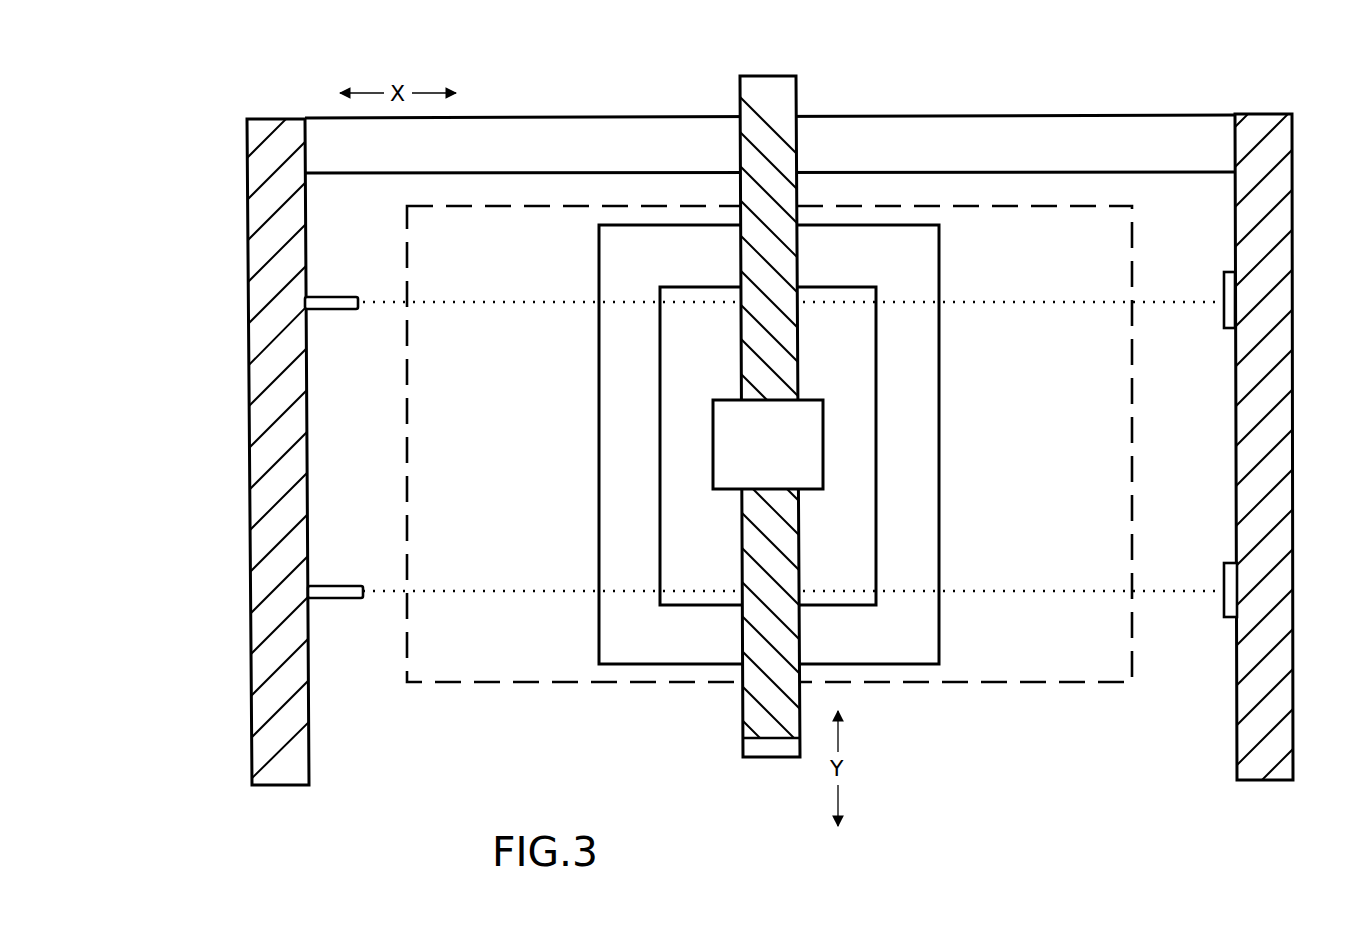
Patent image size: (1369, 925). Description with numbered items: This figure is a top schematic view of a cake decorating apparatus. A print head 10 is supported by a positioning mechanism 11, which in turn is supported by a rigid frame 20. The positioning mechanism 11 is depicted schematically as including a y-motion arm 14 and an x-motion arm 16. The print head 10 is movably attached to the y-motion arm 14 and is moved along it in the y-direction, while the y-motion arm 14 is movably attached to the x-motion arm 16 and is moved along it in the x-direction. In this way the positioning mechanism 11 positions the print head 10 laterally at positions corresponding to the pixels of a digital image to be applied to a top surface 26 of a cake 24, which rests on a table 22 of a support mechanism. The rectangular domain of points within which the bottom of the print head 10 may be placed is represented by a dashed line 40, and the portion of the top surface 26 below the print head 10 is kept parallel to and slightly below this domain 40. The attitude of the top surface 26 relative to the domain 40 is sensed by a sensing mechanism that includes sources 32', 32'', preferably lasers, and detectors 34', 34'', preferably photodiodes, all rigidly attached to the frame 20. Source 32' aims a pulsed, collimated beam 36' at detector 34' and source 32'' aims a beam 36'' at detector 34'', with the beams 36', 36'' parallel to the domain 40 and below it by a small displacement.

The print head 10 is at (782, 454).
The positioning mechanism 11 is at (812, 68).
The y-motion arm 14 is at (767, 190).
The x-motion arm 16 is at (528, 140).
The rigid frame 20 is at (257, 495).
The table 22 is at (896, 268).
The cake 24 is at (877, 450).
The top surface 26 is at (851, 552).
The source 32' is at (347, 558).
The source 32'' is at (350, 272).
The detector 34' is at (1203, 623).
The detector 34'' is at (1201, 337).
The beam 36' is at (793, 624).
The beam 36'' is at (793, 334).
The dashed line 40 is at (1050, 686).